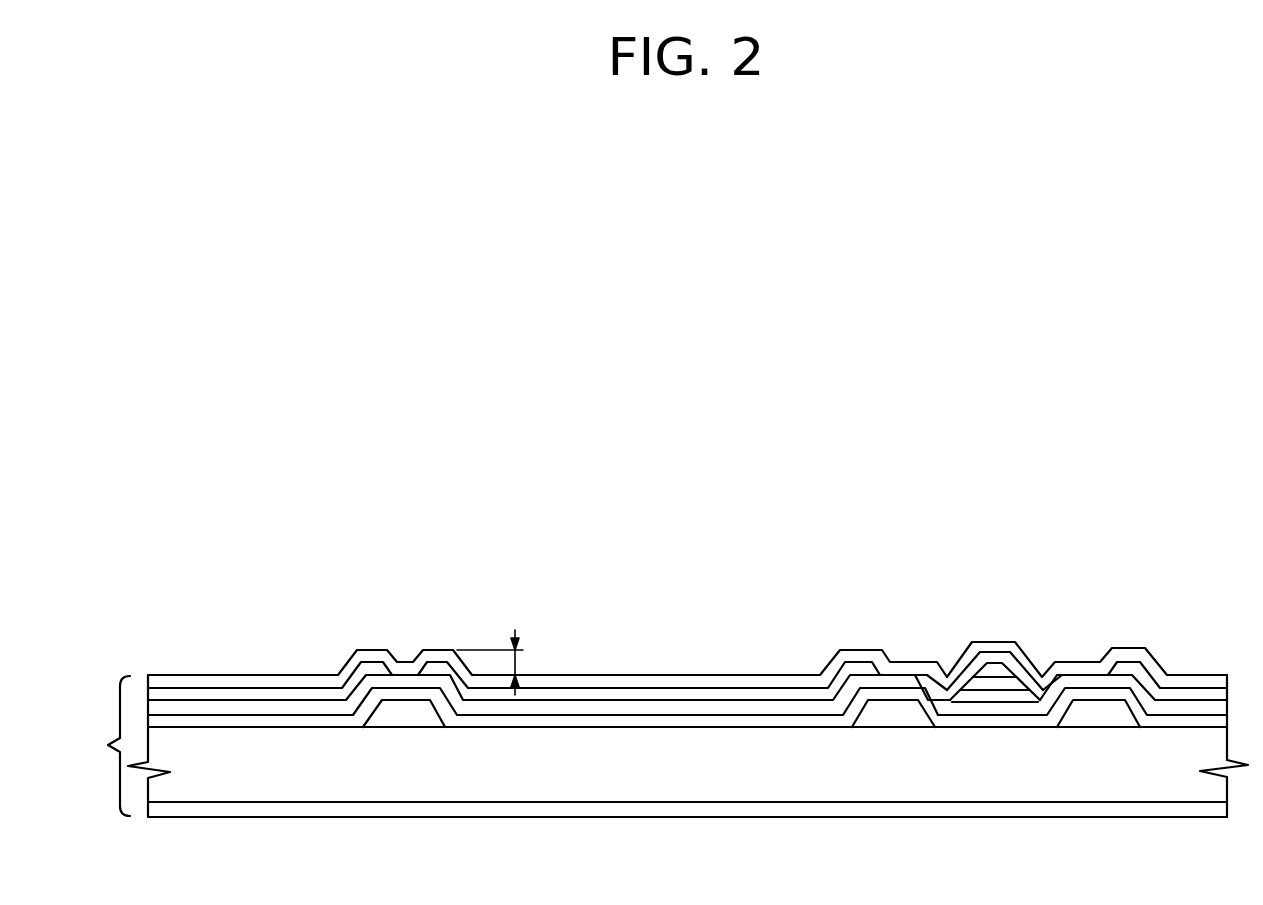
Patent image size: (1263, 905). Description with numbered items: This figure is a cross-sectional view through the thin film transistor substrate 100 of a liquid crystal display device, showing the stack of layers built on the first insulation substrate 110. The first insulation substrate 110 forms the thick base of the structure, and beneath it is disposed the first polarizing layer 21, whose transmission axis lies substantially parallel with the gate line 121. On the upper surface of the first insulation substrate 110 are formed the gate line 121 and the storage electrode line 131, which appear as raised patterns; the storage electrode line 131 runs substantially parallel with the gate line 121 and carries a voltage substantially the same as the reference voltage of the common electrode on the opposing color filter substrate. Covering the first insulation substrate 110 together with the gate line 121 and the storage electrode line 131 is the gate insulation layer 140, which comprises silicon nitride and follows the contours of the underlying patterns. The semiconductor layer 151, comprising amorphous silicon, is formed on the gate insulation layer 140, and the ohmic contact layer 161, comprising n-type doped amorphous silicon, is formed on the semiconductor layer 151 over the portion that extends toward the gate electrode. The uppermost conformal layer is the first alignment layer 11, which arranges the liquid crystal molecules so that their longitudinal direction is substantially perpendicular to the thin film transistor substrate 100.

The thin film transistor substrate 100 is at (93, 746).
The first insulation substrate 110 is at (222, 792).
The first polarizing layer 21 is at (622, 807).
The first alignment layer 11 is at (275, 692).
The gate line 121 is at (392, 718).
The storage electrode line 131 is at (893, 718).
The gate insulation layer 140 is at (996, 720).
The semiconductor layer 151 is at (1020, 705).
The ohmic contact layer 161 is at (990, 690).